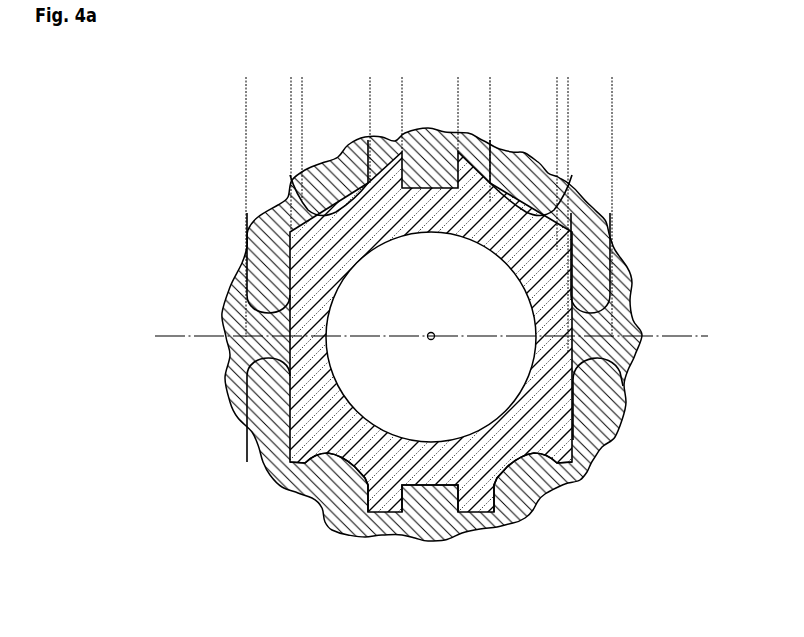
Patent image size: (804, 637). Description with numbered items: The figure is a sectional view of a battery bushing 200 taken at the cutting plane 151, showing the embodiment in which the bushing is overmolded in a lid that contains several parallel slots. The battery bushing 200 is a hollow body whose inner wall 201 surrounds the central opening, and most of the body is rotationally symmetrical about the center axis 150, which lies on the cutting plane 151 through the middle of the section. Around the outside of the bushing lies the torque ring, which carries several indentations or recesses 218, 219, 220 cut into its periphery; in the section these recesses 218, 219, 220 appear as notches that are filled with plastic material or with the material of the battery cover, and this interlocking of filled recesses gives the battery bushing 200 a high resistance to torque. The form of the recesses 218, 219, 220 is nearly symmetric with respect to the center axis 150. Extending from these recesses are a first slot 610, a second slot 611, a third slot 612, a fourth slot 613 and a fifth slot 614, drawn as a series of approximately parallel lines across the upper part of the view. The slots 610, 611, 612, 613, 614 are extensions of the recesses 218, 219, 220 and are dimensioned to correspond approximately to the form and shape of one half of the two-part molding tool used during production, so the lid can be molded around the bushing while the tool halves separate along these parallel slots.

The battery bushing 200 is at (590, 236).
The inner wall 201 is at (532, 348).
The center axis 150 is at (434, 333).
The cutting plane 151 is at (690, 333).
The recess 218 is at (427, 503).
The recess 219 is at (320, 498).
The recess 220 is at (247, 407).
The first slot 610 is at (268, 207).
The second slot 611 is at (336, 138).
The third slot 612 is at (430, 114).
The fourth slot 613 is at (523, 163).
The fifth slot 614 is at (590, 215).